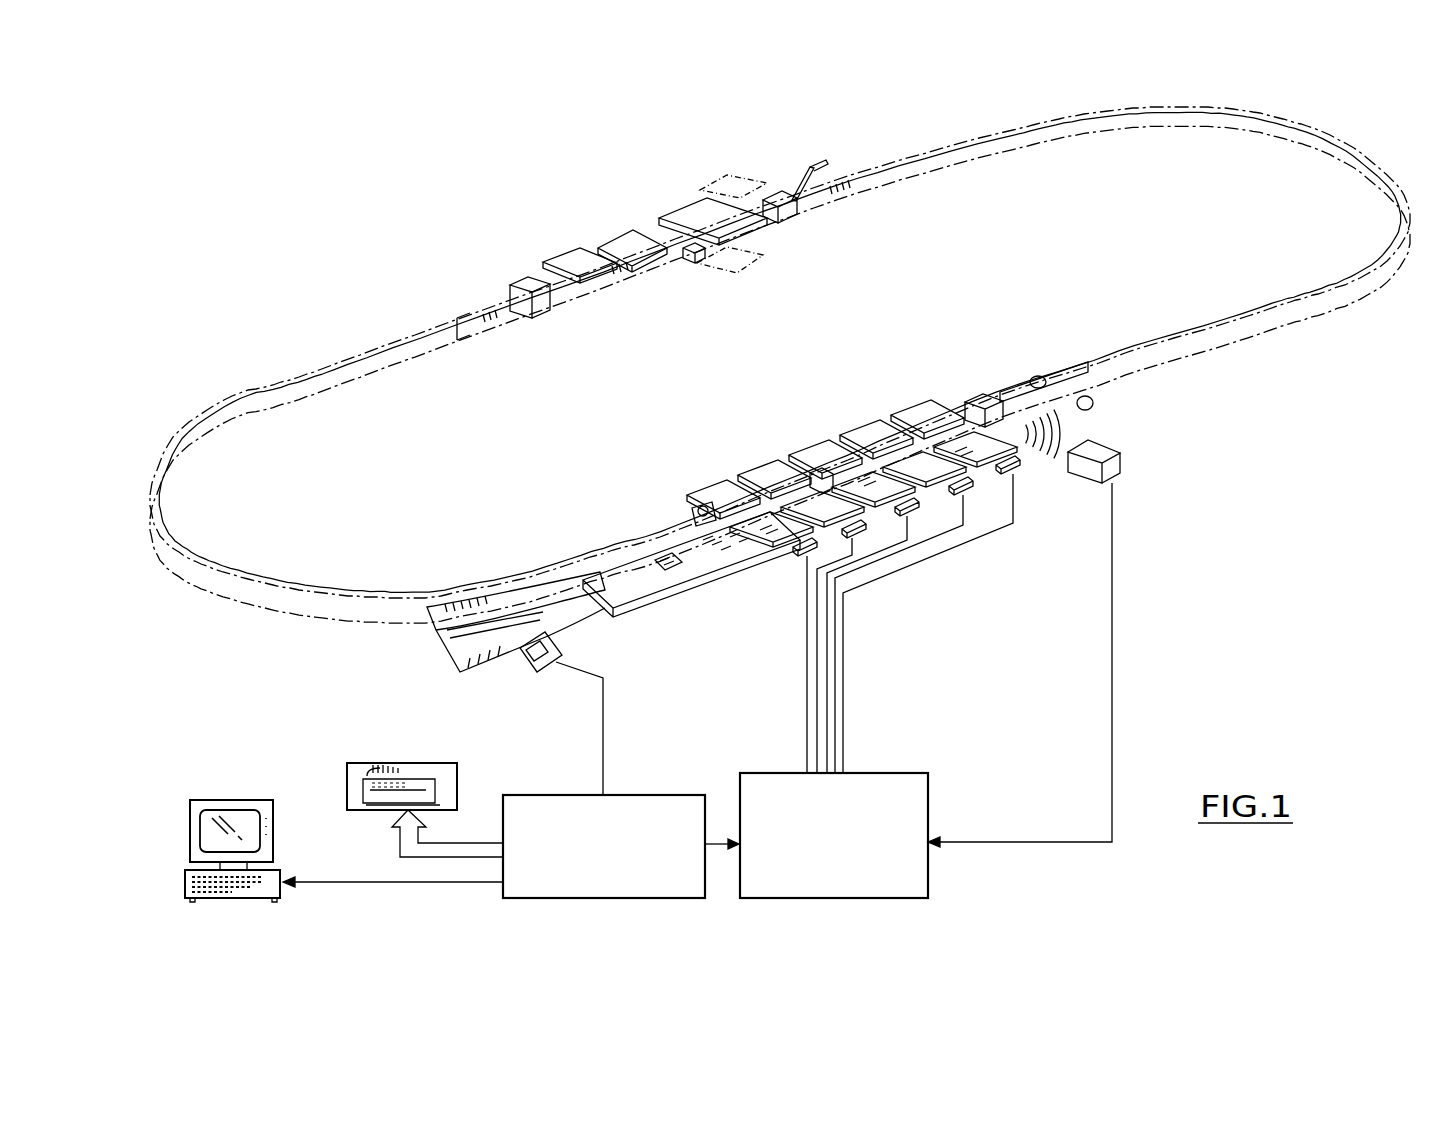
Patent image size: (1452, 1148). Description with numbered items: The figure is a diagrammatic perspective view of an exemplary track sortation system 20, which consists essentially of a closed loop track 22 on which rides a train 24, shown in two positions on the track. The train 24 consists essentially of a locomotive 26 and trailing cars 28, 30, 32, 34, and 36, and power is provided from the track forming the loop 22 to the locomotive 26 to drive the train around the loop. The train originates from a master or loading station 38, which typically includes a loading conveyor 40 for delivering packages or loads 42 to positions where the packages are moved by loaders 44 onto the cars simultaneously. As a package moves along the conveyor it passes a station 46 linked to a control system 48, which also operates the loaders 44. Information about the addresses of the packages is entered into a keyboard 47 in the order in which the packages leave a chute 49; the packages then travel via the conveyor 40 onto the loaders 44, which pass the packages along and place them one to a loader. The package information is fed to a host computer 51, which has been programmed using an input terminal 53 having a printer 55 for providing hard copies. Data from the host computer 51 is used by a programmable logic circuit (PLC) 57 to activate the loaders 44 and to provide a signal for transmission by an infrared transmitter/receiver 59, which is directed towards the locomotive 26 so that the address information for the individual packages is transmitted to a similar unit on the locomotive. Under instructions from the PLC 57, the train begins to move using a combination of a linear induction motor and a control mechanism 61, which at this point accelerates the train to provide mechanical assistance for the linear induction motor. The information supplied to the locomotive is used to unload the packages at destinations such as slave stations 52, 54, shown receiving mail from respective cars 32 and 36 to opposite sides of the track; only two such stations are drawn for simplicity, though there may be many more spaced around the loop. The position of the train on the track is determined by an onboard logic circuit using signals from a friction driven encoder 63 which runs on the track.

The track sortation system 20 is at (350, 297).
The closed loop track 22 is at (486, 345).
The train 24 is at (567, 214).
The locomotive 26 is at (528, 270).
The trailing car 28 is at (583, 288).
The trailing car 30 is at (650, 272).
The trailing car 32 is at (694, 264).
The trailing car 34 is at (755, 234).
The trailing car 36 is at (797, 216).
The master or loading station 38 is at (640, 432).
The loading conveyor 40 is at (600, 566).
The packages or loads 42 is at (640, 552).
The loaders 44 is at (750, 512).
The station 46 is at (588, 630).
The keyboard 47 is at (528, 665).
The control system 48 is at (960, 729).
The chute 49 is at (508, 610).
The host computer 51 is at (672, 794).
The slave station 52 is at (752, 270).
The input terminal 53 is at (232, 800).
The slave station 54 is at (718, 176).
The printer 55 is at (347, 797).
The programmable logic circuit (PLC) 57 is at (769, 773).
The infrared transmitter/receiver 59 is at (1108, 450).
The control mechanism 61 is at (1062, 395).
The friction driven encoder 63 is at (805, 190).